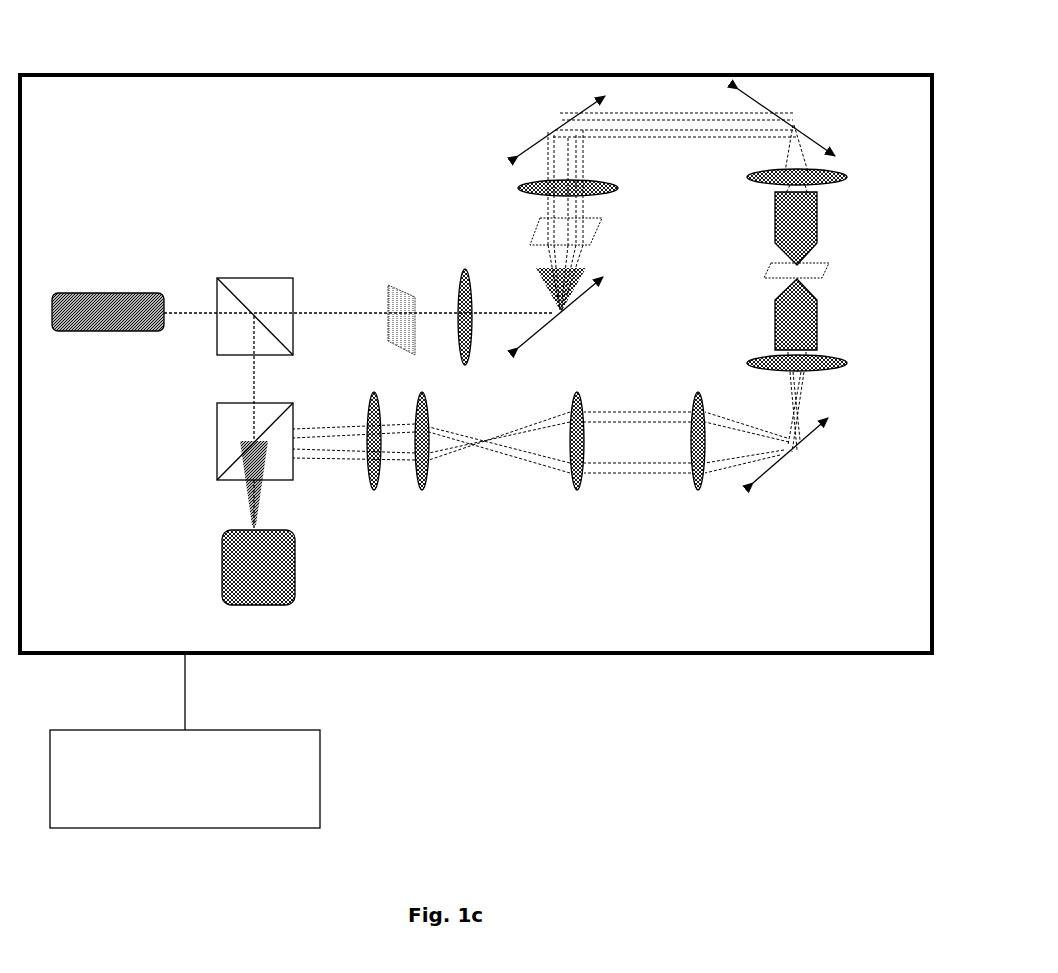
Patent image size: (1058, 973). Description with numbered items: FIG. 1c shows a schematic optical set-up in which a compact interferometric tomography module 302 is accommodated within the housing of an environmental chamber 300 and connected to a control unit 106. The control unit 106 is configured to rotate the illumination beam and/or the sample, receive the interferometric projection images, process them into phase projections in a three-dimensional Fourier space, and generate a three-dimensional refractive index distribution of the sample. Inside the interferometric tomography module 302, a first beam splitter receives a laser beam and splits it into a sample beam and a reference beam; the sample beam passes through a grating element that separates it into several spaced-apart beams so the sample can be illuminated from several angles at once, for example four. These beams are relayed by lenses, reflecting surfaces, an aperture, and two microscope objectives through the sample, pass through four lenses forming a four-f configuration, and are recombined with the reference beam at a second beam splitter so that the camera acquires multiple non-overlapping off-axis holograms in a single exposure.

The environmental chamber 300 is at (199, 75).
The interferometric tomography module 302 is at (231, 198).
The control unit 106 is at (185, 740).